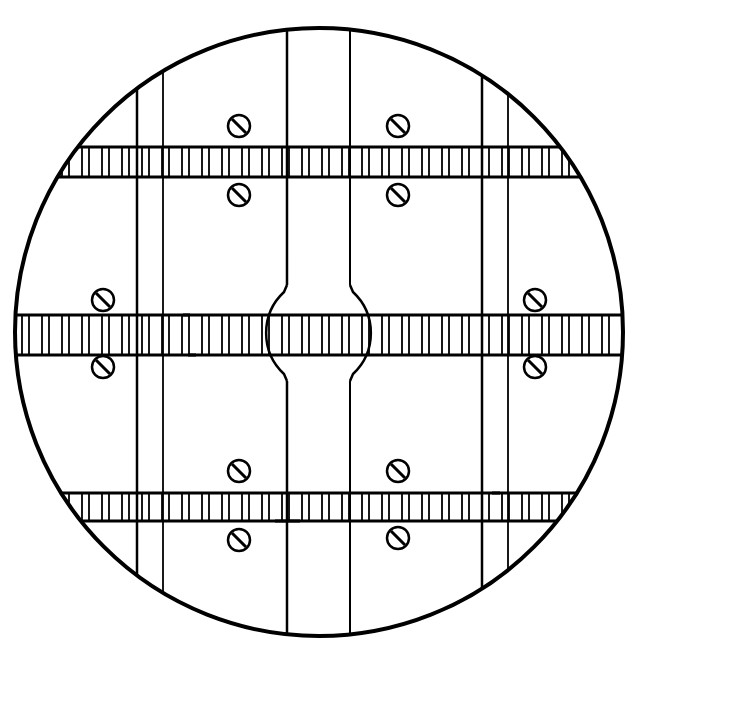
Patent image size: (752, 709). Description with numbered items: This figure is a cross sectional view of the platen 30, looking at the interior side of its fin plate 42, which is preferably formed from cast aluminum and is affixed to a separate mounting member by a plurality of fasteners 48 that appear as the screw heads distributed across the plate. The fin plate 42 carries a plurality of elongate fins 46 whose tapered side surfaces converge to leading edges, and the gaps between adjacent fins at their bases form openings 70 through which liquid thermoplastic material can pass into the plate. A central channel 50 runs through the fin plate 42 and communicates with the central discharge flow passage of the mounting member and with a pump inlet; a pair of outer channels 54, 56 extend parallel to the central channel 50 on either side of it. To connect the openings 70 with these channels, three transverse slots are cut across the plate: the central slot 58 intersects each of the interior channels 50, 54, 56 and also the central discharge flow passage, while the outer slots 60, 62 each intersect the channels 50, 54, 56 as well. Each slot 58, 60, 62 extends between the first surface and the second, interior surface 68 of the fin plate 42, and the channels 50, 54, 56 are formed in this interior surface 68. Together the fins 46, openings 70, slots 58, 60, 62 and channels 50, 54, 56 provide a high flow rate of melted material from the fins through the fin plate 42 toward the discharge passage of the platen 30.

The platen 30 is at (70, 118).
The fin plate 42 is at (537, 110).
The elongate fins 46 is at (187, 315).
The fasteners 48 is at (93, 296).
The central channel 50 is at (318, 335).
The outer channel 54 is at (150, 335).
The outer channel 56 is at (495, 335).
The central slot 58 is at (320, 335).
The outer slot 60 is at (320, 507).
The outer slot 62 is at (320, 162).
The second interior surface 68 is at (318, 333).
The openings 70 is at (192, 356).